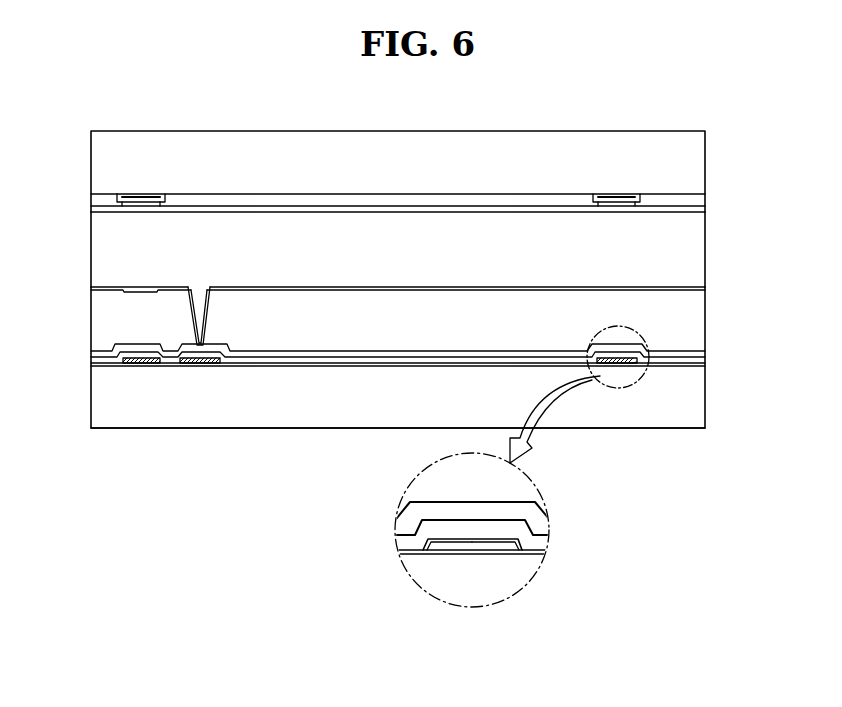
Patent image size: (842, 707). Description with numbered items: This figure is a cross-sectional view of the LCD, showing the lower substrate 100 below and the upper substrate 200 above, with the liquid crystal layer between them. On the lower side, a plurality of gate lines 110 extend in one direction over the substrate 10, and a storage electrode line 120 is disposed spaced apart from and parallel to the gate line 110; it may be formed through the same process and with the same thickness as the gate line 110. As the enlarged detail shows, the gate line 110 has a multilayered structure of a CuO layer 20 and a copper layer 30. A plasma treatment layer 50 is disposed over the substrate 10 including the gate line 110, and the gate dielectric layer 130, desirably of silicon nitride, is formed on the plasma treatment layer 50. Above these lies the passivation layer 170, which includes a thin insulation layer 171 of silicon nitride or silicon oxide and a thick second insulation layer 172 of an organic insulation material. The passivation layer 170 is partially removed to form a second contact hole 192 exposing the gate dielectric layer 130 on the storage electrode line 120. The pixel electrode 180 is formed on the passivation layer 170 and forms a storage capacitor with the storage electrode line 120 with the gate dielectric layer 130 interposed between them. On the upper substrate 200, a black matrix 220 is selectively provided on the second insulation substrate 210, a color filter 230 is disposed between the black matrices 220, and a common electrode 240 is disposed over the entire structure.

The upper substrate 200 is at (103, 111).
The lower substrate 100 is at (98, 447).
The second insulation substrate 210 is at (705, 162).
The black matrix 220 is at (617, 196).
The color filter 230 is at (705, 197).
The common electrode 240 is at (705, 212).
The pixel electrode 180 is at (91, 288).
The second contact hole 192 is at (198, 287).
The passivation layer 170 is at (460, 428).
The second insulation layer 172 is at (705, 325).
The insulation layer 171 is at (705, 352).
The gate dielectric layer 130 is at (705, 364).
The plasma treatment layer 50 is at (697, 368).
The substrate 10 is at (705, 416).
The gate line 110 is at (143, 366).
The storage electrode line 120 is at (203, 366).
The CuO layer 20 is at (433, 553).
The copper layer 30 is at (468, 547).